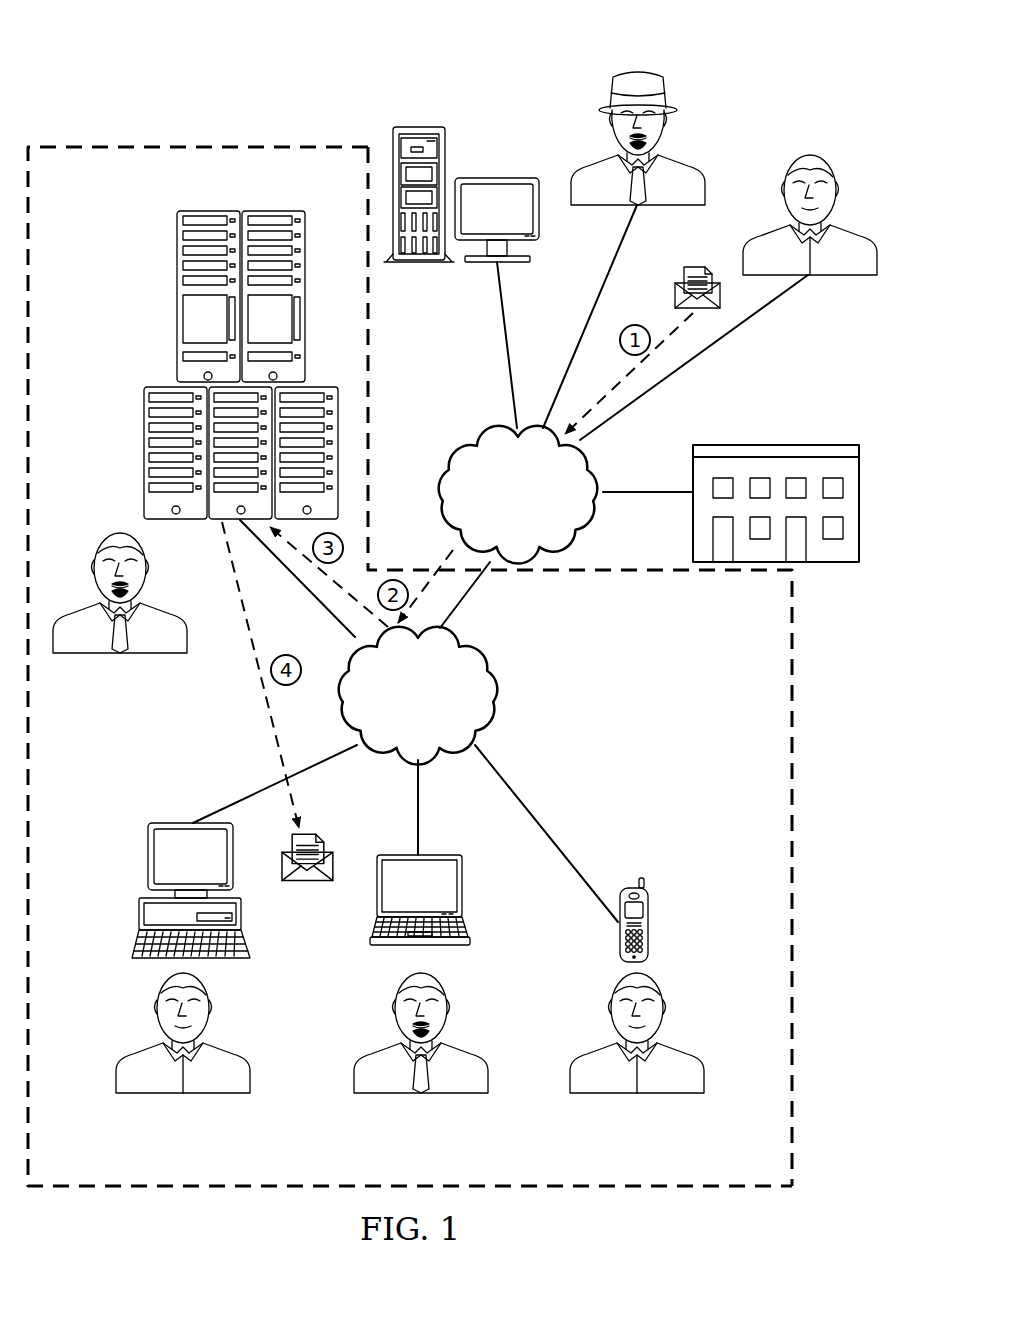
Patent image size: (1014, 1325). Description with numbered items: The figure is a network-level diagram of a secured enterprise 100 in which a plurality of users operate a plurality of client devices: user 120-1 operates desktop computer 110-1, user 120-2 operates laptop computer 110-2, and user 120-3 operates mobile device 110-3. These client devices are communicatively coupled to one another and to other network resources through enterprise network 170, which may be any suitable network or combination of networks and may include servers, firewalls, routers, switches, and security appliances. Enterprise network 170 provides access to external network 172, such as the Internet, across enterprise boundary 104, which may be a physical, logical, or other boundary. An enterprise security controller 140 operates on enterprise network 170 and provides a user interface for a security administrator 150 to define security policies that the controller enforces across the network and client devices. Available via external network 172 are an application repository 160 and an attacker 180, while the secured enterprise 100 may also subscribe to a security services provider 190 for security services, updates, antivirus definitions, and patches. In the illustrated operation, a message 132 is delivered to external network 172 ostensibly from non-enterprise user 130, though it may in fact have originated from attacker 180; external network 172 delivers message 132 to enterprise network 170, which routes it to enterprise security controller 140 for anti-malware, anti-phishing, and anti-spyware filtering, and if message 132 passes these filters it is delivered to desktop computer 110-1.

The secured enterprise 100 is at (158, 143).
The enterprise boundary 104 is at (592, 572).
The enterprise security controller 140 is at (173, 275).
The security administrator 150 is at (118, 654).
The application repository 160 is at (497, 177).
The attacker 180 is at (641, 71).
The non-enterprise user 130 is at (810, 162).
The message 132 is at (690, 264).
The external network 172 is at (537, 535).
The security services provider 190 is at (796, 444).
The enterprise network 170 is at (437, 736).
The desktop computer 110-1 is at (139, 913).
The laptop computer 110-2 is at (468, 929).
The mobile device 110-3 is at (650, 927).
The user 120-1 is at (637, 1094).
The user 120-2 is at (421, 1094).
The user 120-3 is at (183, 1094).